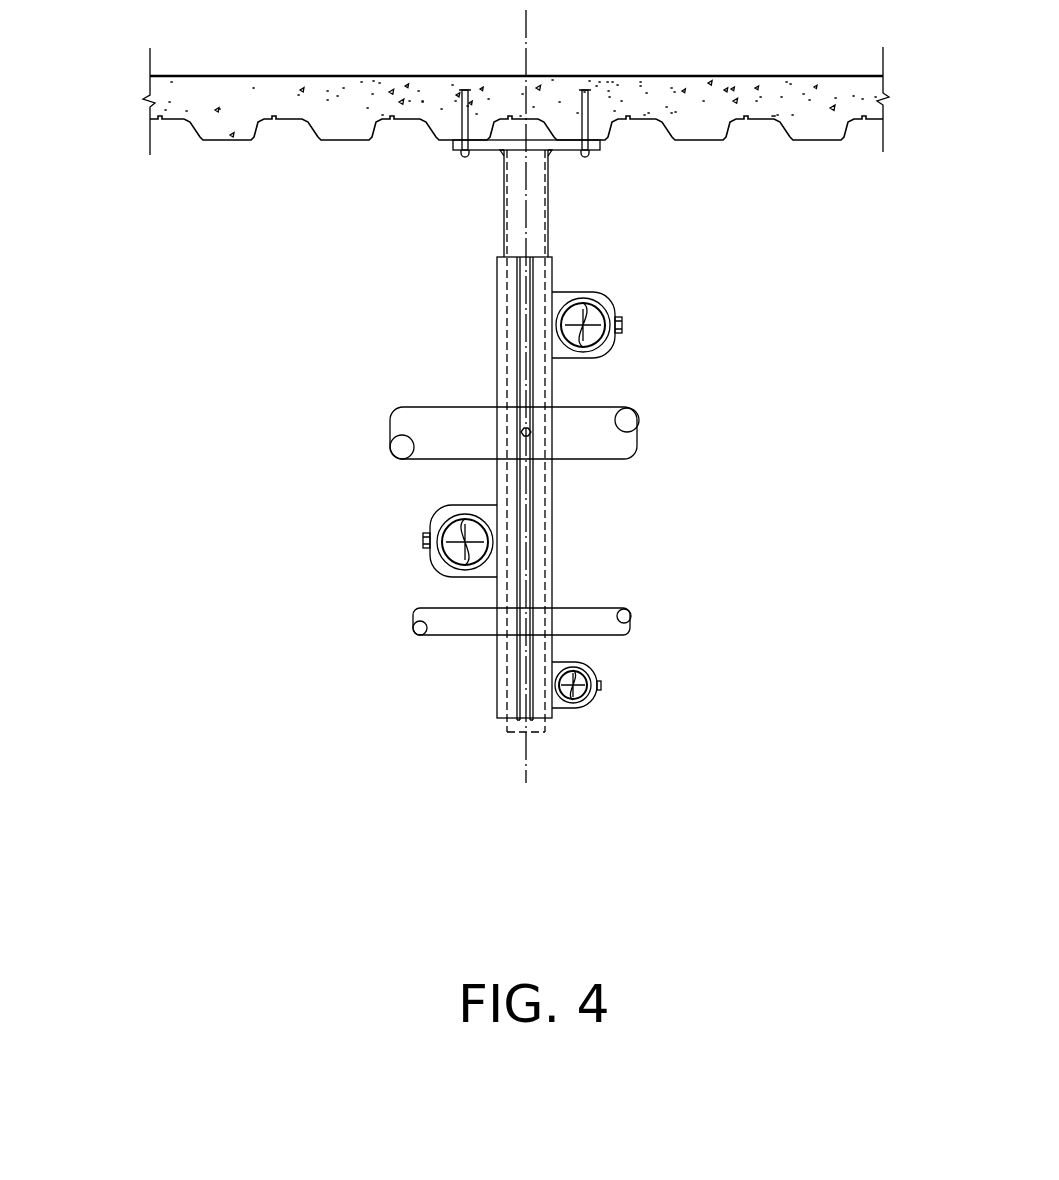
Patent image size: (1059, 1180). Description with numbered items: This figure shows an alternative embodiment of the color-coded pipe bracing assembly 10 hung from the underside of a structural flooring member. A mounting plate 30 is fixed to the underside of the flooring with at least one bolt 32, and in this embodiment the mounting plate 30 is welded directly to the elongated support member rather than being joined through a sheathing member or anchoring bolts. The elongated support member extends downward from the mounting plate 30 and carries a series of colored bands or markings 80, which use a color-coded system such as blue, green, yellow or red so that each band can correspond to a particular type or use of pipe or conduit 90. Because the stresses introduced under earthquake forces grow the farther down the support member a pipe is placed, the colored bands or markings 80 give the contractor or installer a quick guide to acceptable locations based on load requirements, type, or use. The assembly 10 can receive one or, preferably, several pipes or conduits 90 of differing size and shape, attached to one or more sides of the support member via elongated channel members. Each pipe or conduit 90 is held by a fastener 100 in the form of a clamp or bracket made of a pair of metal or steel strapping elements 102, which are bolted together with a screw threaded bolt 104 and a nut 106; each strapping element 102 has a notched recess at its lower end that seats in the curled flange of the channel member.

The pipe bracing assembly 10 is at (155, 300).
The mounting plate 30 is at (600, 143).
The bolt 32 is at (590, 98).
The colored bands or markings 80 is at (497, 612).
The pipe or conduit 90 is at (637, 420).
The fastener 100 is at (652, 328).
The strapping element 102 is at (573, 708).
The screw threaded bolt 104 is at (600, 682).
The nut 106 is at (600, 690).